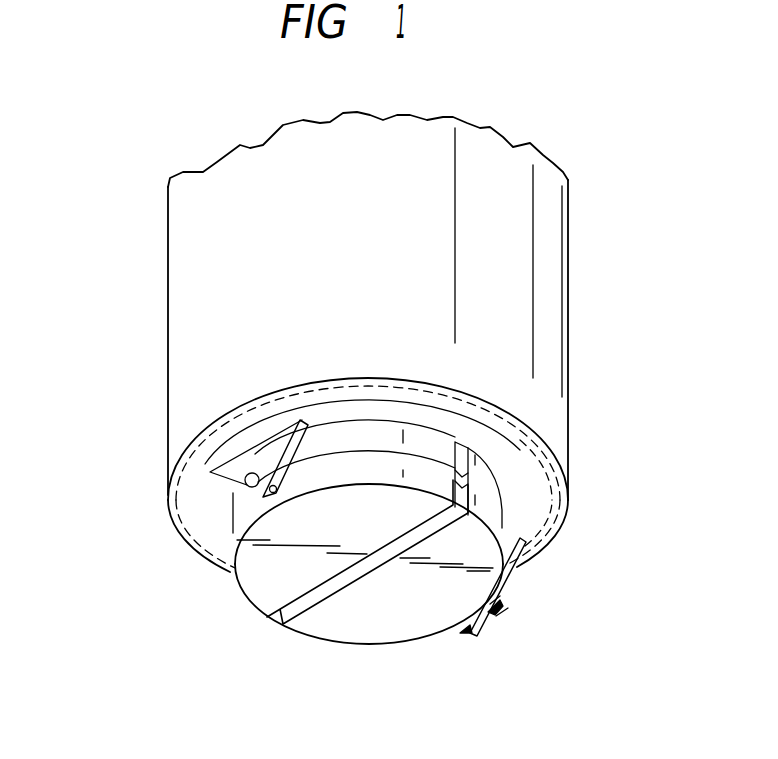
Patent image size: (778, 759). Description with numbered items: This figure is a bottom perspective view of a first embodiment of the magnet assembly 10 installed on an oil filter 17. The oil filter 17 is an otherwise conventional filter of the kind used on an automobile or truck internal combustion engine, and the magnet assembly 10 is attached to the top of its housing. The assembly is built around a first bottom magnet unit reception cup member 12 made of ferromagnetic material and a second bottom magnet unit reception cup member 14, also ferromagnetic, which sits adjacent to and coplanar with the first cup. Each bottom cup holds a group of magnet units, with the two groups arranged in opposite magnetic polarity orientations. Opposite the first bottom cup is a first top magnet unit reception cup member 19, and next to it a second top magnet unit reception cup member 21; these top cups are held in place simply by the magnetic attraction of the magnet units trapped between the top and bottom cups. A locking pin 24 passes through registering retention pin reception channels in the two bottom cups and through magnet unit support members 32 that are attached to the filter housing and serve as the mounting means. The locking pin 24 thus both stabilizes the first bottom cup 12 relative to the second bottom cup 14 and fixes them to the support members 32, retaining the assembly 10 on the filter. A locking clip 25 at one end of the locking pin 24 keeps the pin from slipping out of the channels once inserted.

The magnet assembly 10 is at (165, 571).
The first bottom magnet unit reception cup member 12 is at (270, 568).
The second bottom magnet unit reception cup member 14 is at (415, 627).
The oil filter 17 is at (538, 405).
The first top magnet unit reception cup member 19 is at (327, 438).
The second top magnet unit reception cup member 21 is at (483, 477).
The locking pin 24 is at (270, 500).
The locking clip 25 is at (497, 618).
The magnet unit support members 32 is at (262, 452).